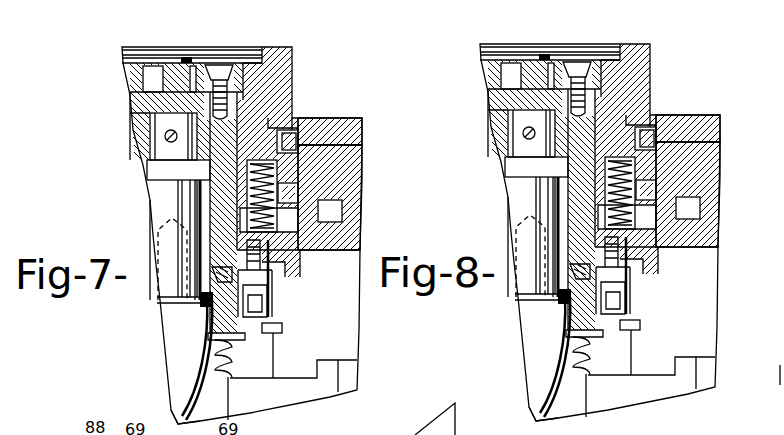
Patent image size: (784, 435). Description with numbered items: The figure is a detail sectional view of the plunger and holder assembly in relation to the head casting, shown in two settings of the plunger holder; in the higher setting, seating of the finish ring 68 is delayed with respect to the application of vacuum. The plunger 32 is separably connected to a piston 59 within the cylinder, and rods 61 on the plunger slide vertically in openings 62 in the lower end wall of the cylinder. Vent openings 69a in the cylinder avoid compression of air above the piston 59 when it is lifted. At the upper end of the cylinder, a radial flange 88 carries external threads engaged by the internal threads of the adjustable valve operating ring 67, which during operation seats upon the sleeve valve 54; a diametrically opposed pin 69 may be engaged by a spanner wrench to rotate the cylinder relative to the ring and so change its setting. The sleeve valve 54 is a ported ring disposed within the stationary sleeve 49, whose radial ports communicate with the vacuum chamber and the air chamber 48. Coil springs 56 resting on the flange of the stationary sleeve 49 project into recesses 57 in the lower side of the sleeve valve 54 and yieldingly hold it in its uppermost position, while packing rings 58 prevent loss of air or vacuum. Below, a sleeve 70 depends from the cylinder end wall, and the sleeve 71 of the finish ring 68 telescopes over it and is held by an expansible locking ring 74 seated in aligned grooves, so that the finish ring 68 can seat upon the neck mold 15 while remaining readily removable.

In FIG. 7, the partible neck mold 15 is at (275, 355).
In FIG. 8, the partible neck mold 15 is at (638, 347).
In FIG. 7, the plunger 32 is at (185, 392).
In FIG. 8, the plunger 32 is at (543, 387).
In FIG. 7, the air chamber 48 is at (340, 214).
In FIG. 8, the air chamber 48 is at (706, 194).
In FIG. 7, the stationary sleeve 49 is at (325, 128).
In FIG. 8, the stationary sleeve 49 is at (688, 111).
In FIG. 7, the sleeve valve 54 is at (296, 130).
In FIG. 8, the sleeve valve 54 is at (652, 103).
In FIG. 7, the coil springs 56 is at (285, 221).
In FIG. 8, the coil springs 56 is at (629, 217).
In FIG. 7, the recesses 57 is at (264, 181).
In FIG. 8, the recesses 57 is at (680, 186).
In FIG. 7, the packing rings 58 is at (300, 141).
In FIG. 8, the packing rings 58 is at (696, 131).
In FIG. 7, the piston 59 is at (130, 115).
In FIG. 8, the piston 59 is at (477, 123).
In FIG. 7, the rods 61 is at (158, 192).
In FIG. 8, the rods 61 is at (486, 234).
In FIG. 7, the openings 62 is at (205, 215).
In FIG. 8, the openings 62 is at (517, 237).
In FIG. 7, the valve operating ring 67 is at (292, 57).
In FIG. 8, the valve operating ring 67 is at (640, 46).
In FIG. 7, the finish ring 68 is at (236, 334).
In FIG. 8, the finish ring 68 is at (596, 372).
In FIG. 7, the pin 69 is at (187, 58).
In FIG. 8, the pin 69 is at (541, 38).
In FIG. 7, the vent openings 69a is at (153, 70).
In FIG. 8, the vent openings 69a is at (505, 50).
In FIG. 7, the sleeve 70 is at (203, 307).
In FIG. 8, the sleeve 70 is at (547, 305).
In FIG. 7, the sleeve 71 is at (270, 289).
In FIG. 8, the sleeve 71 is at (624, 275).
In FIG. 7, the expansible locking ring 74 is at (213, 275).
In FIG. 8, the expansible locking ring 74 is at (553, 260).
In FIG. 7, the radial flange 88 is at (238, 64).
In FIG. 8, the radial flange 88 is at (574, 66).